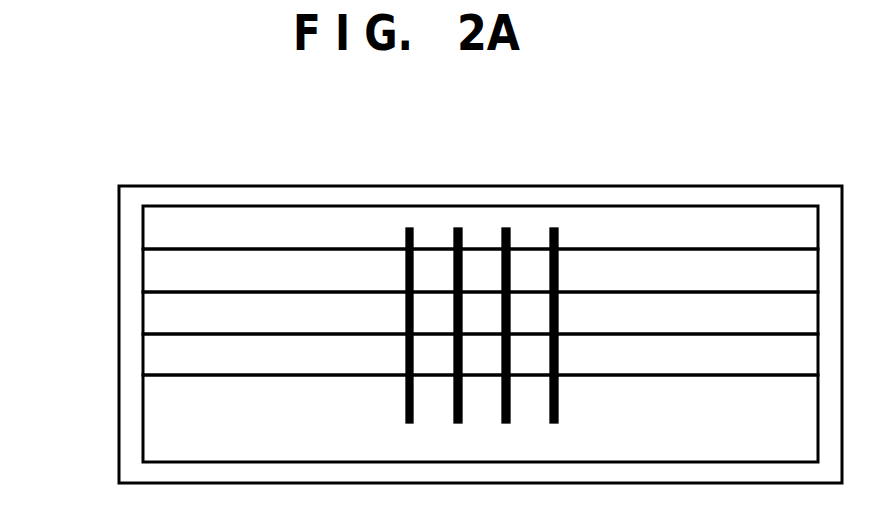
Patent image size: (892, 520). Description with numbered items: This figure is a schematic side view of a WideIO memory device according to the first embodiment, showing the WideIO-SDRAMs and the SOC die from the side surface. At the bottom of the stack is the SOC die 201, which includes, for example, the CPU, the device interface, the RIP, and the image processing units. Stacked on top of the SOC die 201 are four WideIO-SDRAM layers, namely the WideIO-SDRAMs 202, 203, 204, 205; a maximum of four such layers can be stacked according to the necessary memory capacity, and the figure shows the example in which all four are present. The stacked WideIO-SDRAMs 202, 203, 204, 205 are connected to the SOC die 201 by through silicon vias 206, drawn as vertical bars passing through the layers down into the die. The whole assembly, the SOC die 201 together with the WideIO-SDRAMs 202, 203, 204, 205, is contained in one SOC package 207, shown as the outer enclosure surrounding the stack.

The SOC die 201 is at (143, 404).
The WideIO-SDRAM 202 is at (143, 360).
The WideIO-SDRAM 203 is at (143, 316).
The WideIO-SDRAM 204 is at (143, 273).
The WideIO-SDRAM 205 is at (143, 229).
The through silicon vias 206 is at (554, 220).
The SOC package 207 is at (119, 465).